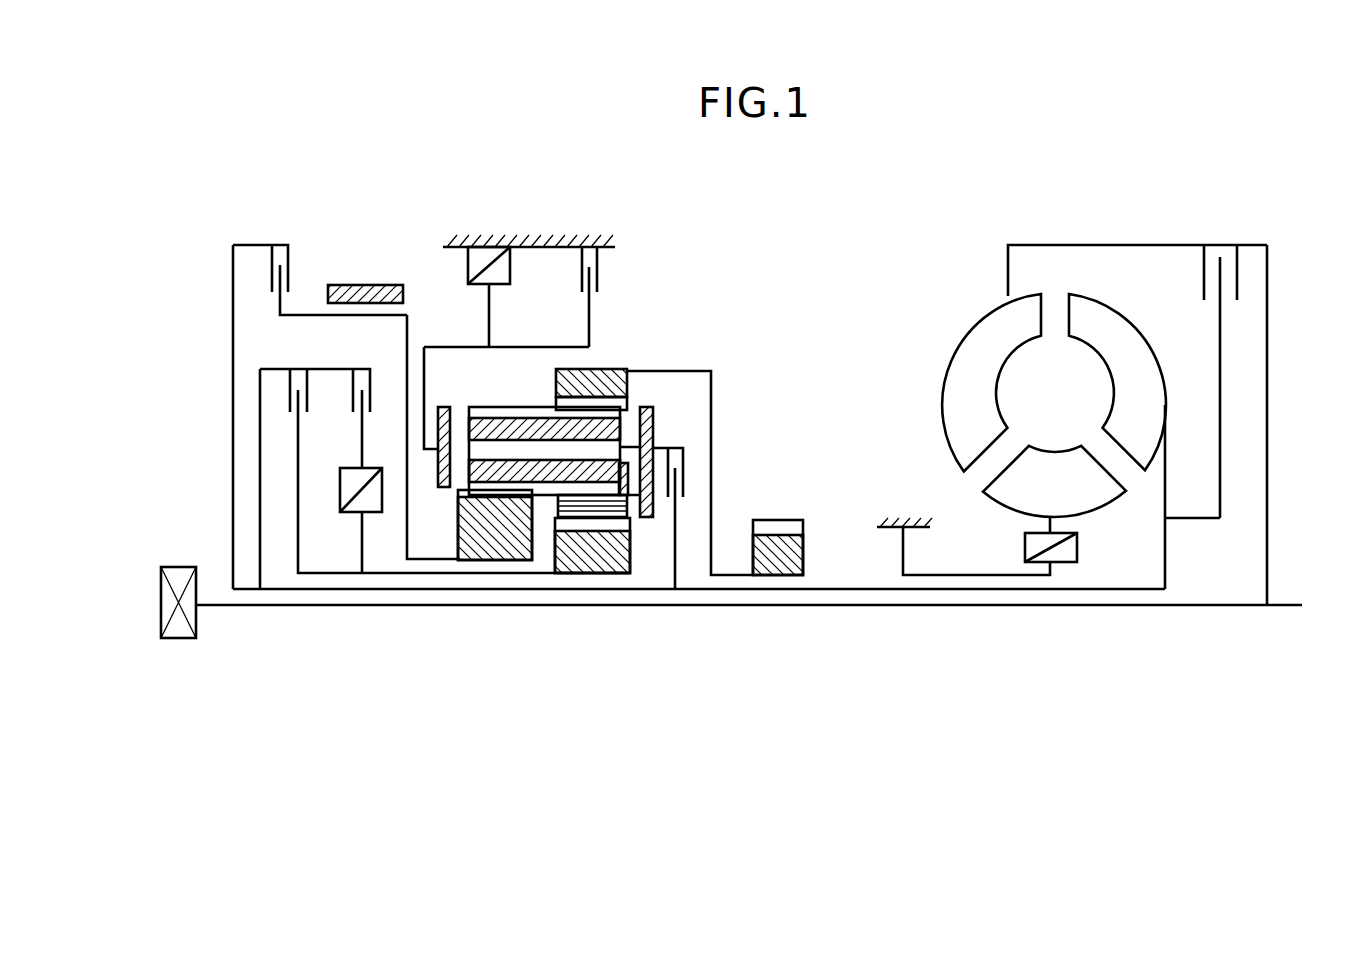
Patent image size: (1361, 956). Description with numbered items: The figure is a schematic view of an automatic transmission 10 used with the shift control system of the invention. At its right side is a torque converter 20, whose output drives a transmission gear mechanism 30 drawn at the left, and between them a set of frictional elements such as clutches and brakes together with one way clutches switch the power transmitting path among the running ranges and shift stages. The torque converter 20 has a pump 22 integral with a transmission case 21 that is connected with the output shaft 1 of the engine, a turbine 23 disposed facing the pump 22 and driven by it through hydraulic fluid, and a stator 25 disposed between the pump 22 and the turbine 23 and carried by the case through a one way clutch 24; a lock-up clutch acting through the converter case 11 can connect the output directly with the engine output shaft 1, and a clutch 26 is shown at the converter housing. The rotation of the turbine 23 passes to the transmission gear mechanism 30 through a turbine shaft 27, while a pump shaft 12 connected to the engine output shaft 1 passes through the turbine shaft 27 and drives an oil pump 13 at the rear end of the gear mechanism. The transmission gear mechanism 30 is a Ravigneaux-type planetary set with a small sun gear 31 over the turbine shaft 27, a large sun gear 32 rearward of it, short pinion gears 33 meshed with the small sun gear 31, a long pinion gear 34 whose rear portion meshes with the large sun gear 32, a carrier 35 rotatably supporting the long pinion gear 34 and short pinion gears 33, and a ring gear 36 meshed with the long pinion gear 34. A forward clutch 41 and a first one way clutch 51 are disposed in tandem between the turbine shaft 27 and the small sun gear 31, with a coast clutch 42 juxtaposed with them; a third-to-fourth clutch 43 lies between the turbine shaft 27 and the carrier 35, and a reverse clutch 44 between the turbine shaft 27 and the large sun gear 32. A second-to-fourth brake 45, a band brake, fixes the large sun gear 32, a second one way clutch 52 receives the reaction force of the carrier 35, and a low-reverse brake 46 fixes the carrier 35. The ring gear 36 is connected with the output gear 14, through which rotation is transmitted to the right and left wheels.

The engine output shaft 1 is at (1280, 603).
The automatic transmission 10 is at (1288, 221).
The converter case 11 is at (528, 240).
The pump shaft 12 is at (280, 607).
The oil pump 13 is at (178, 640).
The output gear 14 is at (775, 520).
The torque converter 20 is at (1048, 365).
The transmission case 21 is at (1120, 243).
The pump 22 is at (968, 333).
The turbine 23 is at (1130, 338).
The one way clutch 24 is at (1078, 548).
The stator 25 is at (1045, 460).
The clutch 26 is at (1240, 278).
The turbine shaft 27 is at (843, 588).
The transmission gear mechanism 30 is at (712, 355).
The small sun gear 31 is at (591, 575).
The large sun gear 32 is at (490, 560).
The short pinion gears 33 is at (617, 516).
The long pinion gear 34 is at (498, 406).
The carrier 35 is at (648, 405).
The ring gear 36 is at (612, 368).
The forward clutch 41 is at (352, 390).
The coast clutch 42 is at (290, 392).
The 3-4 clutch 43 is at (676, 448).
The reverse clutch 44 is at (290, 272).
The 2-4 brake 45 is at (378, 285).
The low-reverse brake 46 is at (600, 275).
The first one way clutch 51 is at (338, 488).
The second one way clutch 52 is at (512, 272).